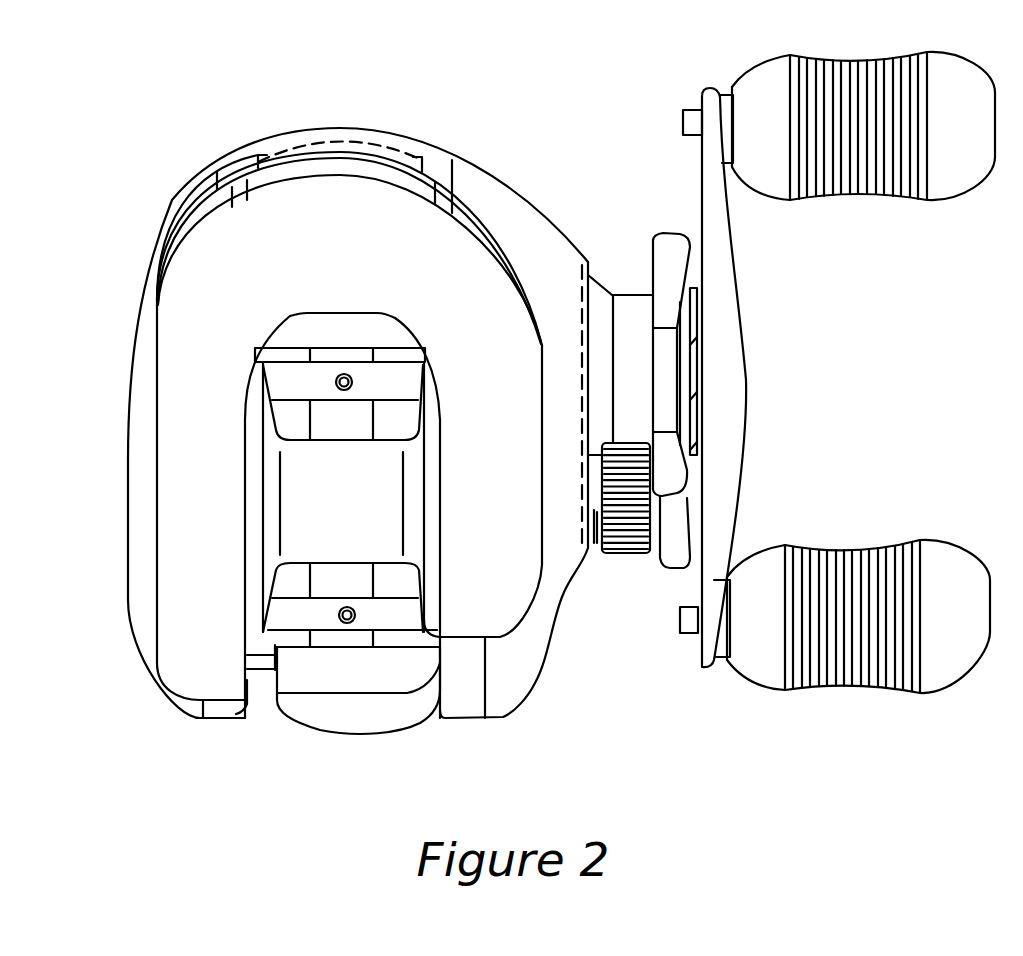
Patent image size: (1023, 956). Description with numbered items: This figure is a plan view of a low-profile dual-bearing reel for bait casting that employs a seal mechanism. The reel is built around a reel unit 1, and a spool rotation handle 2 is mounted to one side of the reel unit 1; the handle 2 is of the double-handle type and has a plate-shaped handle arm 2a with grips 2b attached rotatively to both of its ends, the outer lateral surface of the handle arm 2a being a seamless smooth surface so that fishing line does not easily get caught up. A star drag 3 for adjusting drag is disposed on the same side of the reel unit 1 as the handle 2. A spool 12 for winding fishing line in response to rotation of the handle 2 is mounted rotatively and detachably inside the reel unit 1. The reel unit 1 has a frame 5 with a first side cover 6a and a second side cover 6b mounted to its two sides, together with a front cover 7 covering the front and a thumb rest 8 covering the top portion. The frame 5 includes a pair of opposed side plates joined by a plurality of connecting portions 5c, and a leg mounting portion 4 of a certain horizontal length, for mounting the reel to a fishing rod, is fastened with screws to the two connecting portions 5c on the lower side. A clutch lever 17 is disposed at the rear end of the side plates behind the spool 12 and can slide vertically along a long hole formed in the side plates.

The reel unit 1 is at (408, 140).
The spool rotation handle 2 is at (837, 351).
The handle arm 2a is at (720, 263).
The grips 2b is at (853, 63).
The star drag 3 is at (664, 236).
The leg mounting portion 4 is at (333, 640).
The frame 5 is at (234, 182).
The connecting portions 5c is at (403, 608).
The first side cover 6a is at (168, 217).
The second side cover 6b is at (535, 226).
The front cover 7 is at (241, 158).
The thumb rest 8 is at (413, 222).
The spool 12 is at (302, 545).
The clutch lever 17 is at (337, 723).